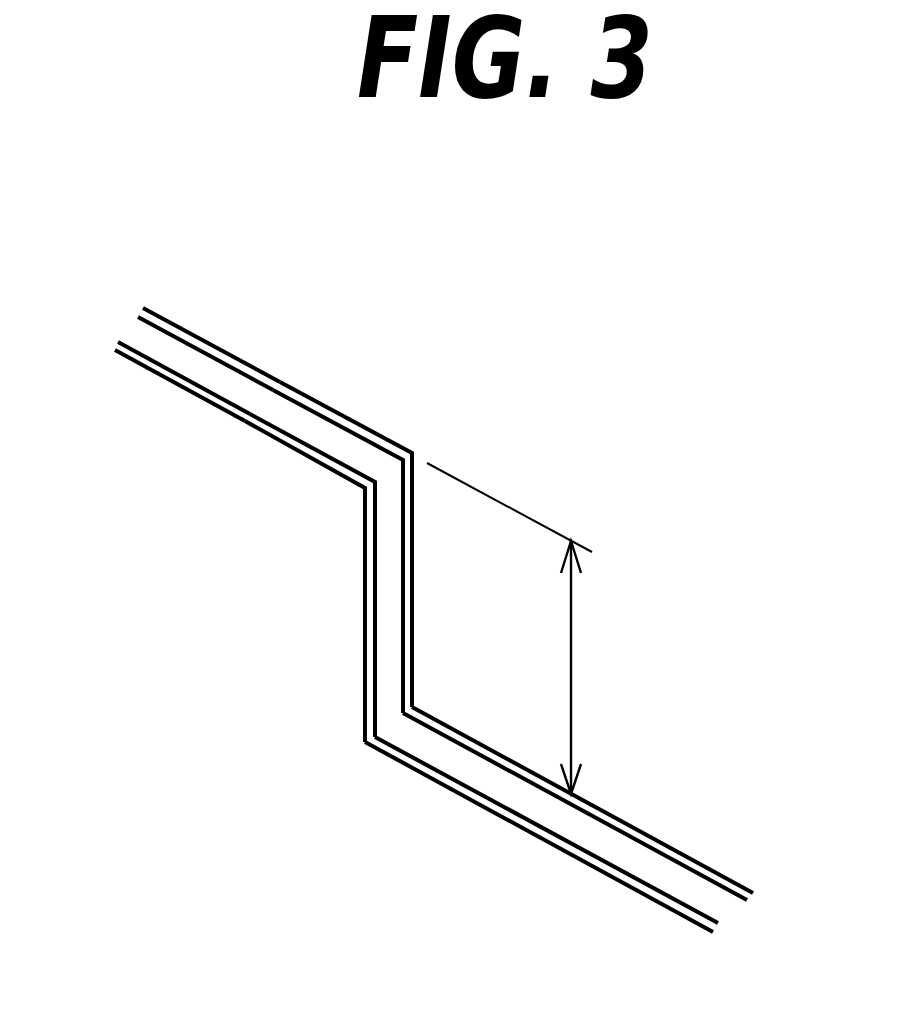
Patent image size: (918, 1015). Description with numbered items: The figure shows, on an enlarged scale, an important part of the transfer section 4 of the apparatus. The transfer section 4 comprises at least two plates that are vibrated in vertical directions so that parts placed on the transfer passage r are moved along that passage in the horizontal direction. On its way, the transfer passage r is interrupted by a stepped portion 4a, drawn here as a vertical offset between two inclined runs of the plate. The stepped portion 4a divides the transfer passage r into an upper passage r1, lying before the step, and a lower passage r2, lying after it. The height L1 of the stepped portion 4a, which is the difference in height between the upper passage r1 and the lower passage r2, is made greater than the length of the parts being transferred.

The transfer section 4 is at (444, 558).
The stepped portion 4a is at (392, 572).
The transfer passage r is at (208, 362).
The upper passage r1 is at (312, 430).
The lower passage r2 is at (662, 877).
The height of the stepped portion L1 is at (533, 628).